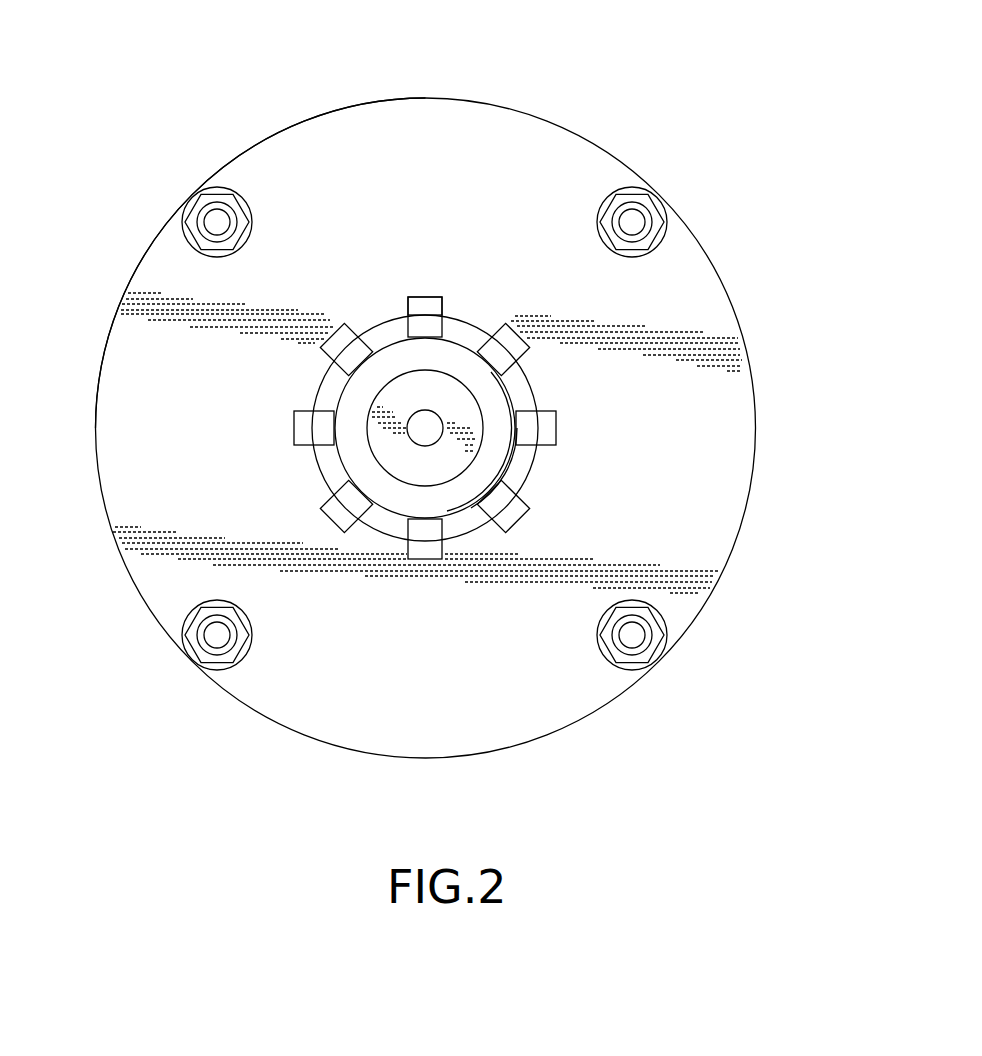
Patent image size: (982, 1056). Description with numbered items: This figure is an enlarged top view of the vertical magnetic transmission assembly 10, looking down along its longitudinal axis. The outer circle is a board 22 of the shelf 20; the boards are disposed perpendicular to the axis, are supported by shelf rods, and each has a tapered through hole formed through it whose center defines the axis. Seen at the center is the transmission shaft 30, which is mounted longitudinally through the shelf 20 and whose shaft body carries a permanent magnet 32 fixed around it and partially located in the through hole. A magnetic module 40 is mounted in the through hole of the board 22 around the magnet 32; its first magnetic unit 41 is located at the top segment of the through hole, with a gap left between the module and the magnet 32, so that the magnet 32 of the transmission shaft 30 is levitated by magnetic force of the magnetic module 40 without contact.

The vertical magnetic transmission assembly 10 is at (557, 85).
The shelf 20 is at (125, 240).
The board 22 is at (290, 123).
The transmission shaft 30 is at (458, 340).
The magnet 32 is at (495, 423).
The magnetic module 40 is at (415, 293).
The first magnetic unit 41 is at (432, 295).